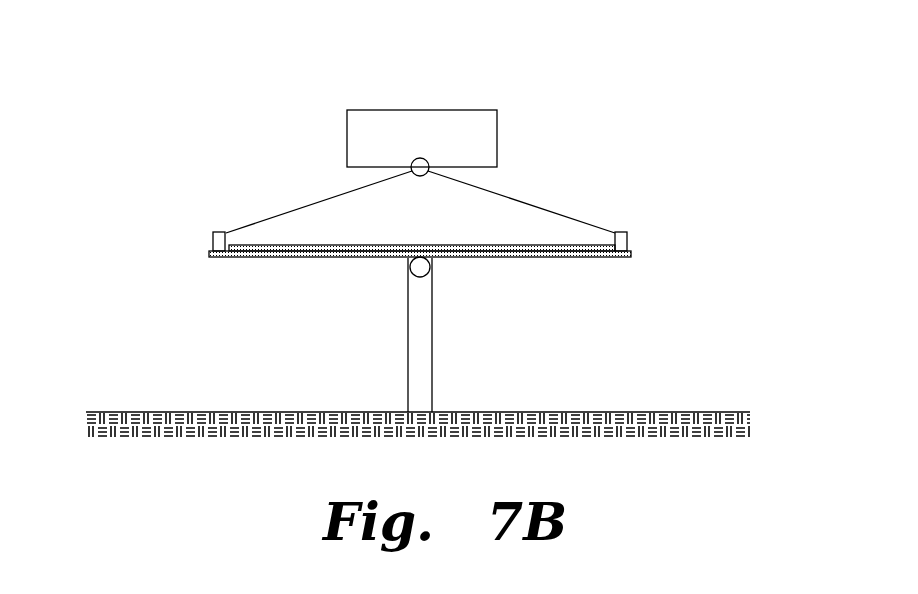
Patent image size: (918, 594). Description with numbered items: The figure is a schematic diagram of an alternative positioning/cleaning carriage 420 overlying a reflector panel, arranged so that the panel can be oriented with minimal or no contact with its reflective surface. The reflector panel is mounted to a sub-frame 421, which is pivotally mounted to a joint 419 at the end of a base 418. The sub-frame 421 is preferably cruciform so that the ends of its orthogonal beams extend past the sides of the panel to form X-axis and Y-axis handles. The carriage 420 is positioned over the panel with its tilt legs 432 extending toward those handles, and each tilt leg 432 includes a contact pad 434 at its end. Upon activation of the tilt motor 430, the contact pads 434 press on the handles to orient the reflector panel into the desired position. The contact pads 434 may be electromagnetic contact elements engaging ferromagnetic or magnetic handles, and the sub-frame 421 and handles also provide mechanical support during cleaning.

The base 418 is at (408, 362).
The joint 419 is at (432, 275).
The positioning/cleaning carriage 420 is at (462, 110).
The sub-frame 421 is at (277, 280).
The tilt motor 430 is at (428, 162).
The tilt legs 432 is at (287, 212).
The contact pads 434 is at (213, 238).